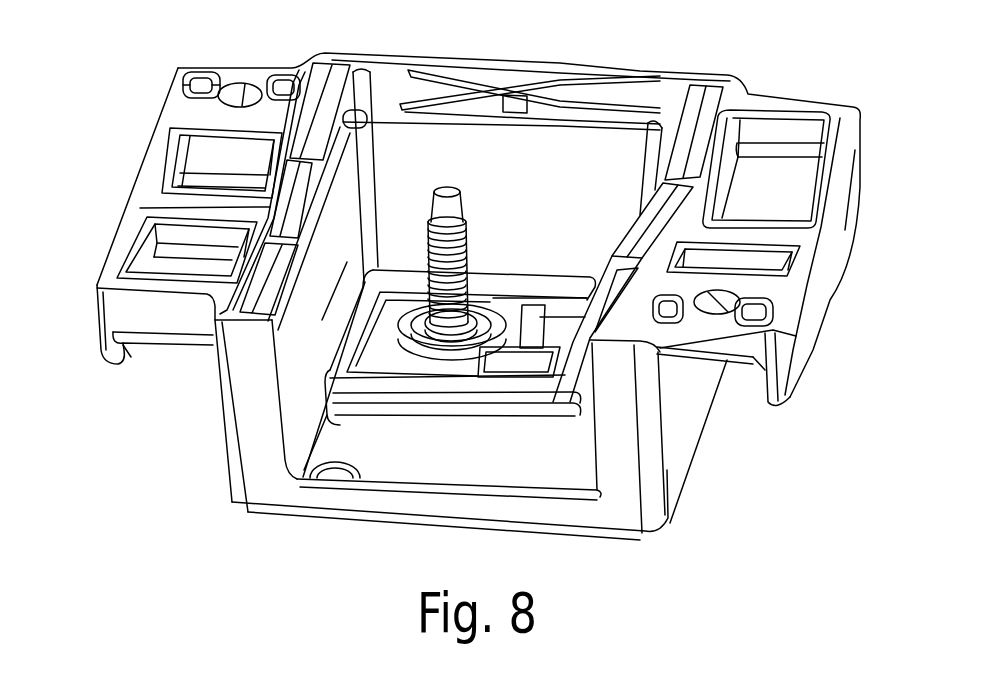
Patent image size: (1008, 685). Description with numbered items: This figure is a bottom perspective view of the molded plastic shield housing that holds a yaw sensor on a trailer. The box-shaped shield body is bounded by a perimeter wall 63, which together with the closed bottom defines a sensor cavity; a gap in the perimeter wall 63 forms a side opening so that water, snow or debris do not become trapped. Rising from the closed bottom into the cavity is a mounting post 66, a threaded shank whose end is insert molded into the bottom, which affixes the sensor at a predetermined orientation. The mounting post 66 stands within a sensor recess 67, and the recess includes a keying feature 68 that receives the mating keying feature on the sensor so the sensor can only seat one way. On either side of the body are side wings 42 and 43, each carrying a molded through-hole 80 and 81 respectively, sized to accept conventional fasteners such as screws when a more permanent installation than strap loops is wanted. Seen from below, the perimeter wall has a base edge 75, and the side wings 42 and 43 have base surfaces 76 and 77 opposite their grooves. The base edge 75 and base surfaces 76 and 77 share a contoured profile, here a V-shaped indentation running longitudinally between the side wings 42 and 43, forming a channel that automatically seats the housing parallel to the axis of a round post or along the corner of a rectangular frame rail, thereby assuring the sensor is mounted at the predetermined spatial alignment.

The side wing 42 is at (170, 315).
The side wing 43 is at (858, 154).
The perimeter wall 63 is at (687, 420).
The mounting post 66 is at (468, 223).
The sensor recess 67 is at (400, 357).
The keying feature 68 is at (527, 363).
The base edge 75 is at (350, 124).
The base surface 76 is at (157, 200).
The base surface 77 is at (813, 235).
The through-hole 80 is at (238, 90).
The through-hole 81 is at (733, 292).